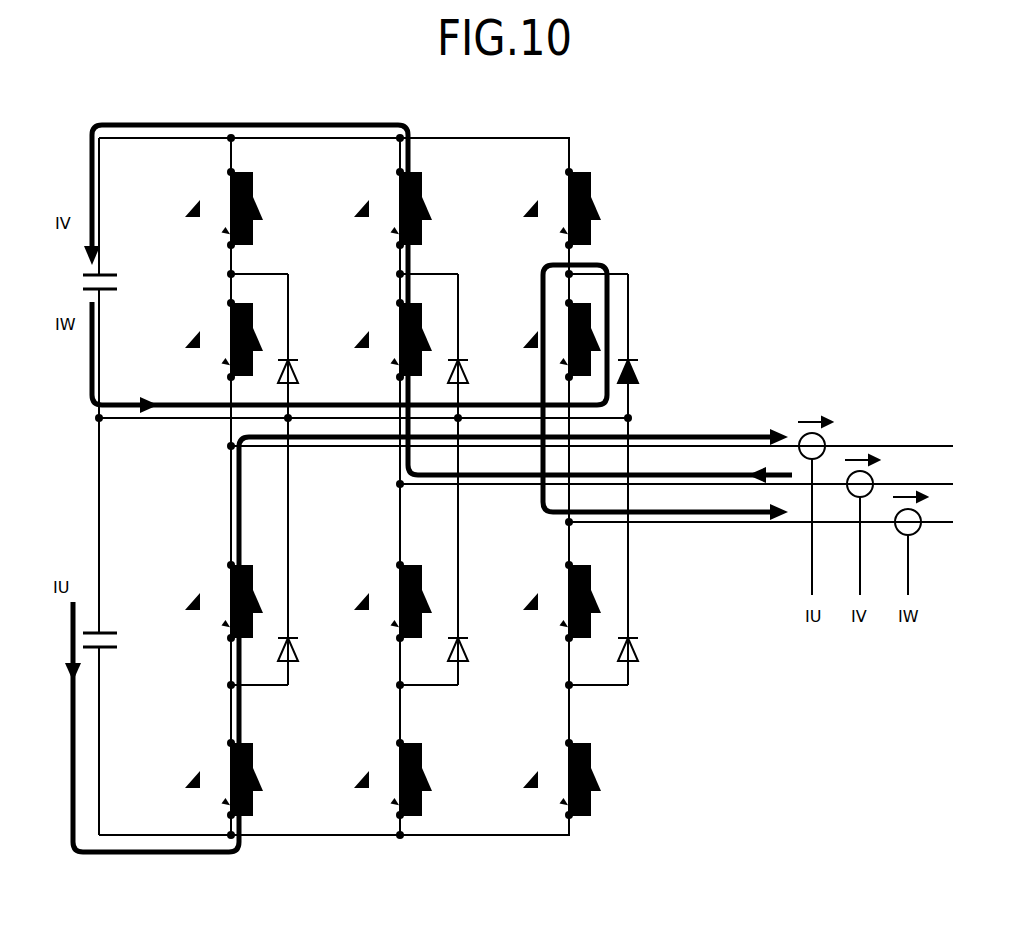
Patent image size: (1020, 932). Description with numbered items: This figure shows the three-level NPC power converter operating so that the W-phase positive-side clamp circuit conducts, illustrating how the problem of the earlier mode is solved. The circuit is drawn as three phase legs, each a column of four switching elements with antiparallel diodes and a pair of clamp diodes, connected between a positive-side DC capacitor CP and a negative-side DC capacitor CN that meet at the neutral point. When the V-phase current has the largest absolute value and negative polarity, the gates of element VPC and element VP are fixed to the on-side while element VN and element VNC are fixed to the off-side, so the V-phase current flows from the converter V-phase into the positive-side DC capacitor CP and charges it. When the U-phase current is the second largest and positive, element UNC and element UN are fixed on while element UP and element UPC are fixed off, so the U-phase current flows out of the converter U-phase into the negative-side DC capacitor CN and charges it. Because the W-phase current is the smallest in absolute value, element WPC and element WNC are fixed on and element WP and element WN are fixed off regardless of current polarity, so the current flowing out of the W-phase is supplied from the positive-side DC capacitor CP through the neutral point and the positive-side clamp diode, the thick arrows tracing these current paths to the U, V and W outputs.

The element UP is at (218, 211).
The element UPC is at (217, 343).
The element VP is at (390, 211).
The element VPC is at (386, 343).
The element WP is at (556, 211).
The element WPC is at (553, 343).
The element UNC is at (216, 605).
The element UN is at (221, 782).
The element VNC is at (385, 605).
The element VN is at (387, 782).
The element WNC is at (552, 605).
The element WN is at (556, 782).
The positive-side DC capacitor CP is at (103, 268).
The negative-side DC capacitor CN is at (104, 626).